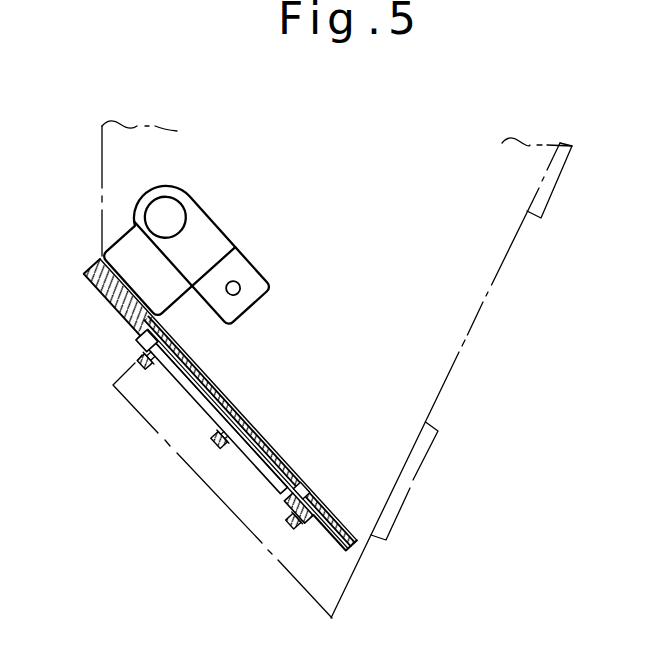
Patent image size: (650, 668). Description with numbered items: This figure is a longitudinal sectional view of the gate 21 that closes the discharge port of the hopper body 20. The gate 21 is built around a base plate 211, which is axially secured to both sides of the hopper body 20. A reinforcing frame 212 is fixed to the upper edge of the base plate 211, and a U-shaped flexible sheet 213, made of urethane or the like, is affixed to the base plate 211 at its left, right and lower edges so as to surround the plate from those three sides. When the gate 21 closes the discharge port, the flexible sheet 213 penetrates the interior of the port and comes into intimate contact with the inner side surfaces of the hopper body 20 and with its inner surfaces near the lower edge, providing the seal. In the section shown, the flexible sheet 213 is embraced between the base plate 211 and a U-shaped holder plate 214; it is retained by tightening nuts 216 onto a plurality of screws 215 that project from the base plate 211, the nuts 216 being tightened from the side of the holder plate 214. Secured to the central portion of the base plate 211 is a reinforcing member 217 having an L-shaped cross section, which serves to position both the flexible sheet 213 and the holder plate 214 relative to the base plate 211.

The hopper body 20 is at (474, 281).
The gate 21 is at (289, 446).
The base plate 211 is at (237, 412).
The reinforcing frame 212 is at (100, 288).
The flexible sheet 213 is at (340, 542).
The holder plate 214 is at (308, 521).
The screws 215 is at (134, 378).
The nuts 216 is at (150, 368).
The reinforcing member 217 is at (258, 456).